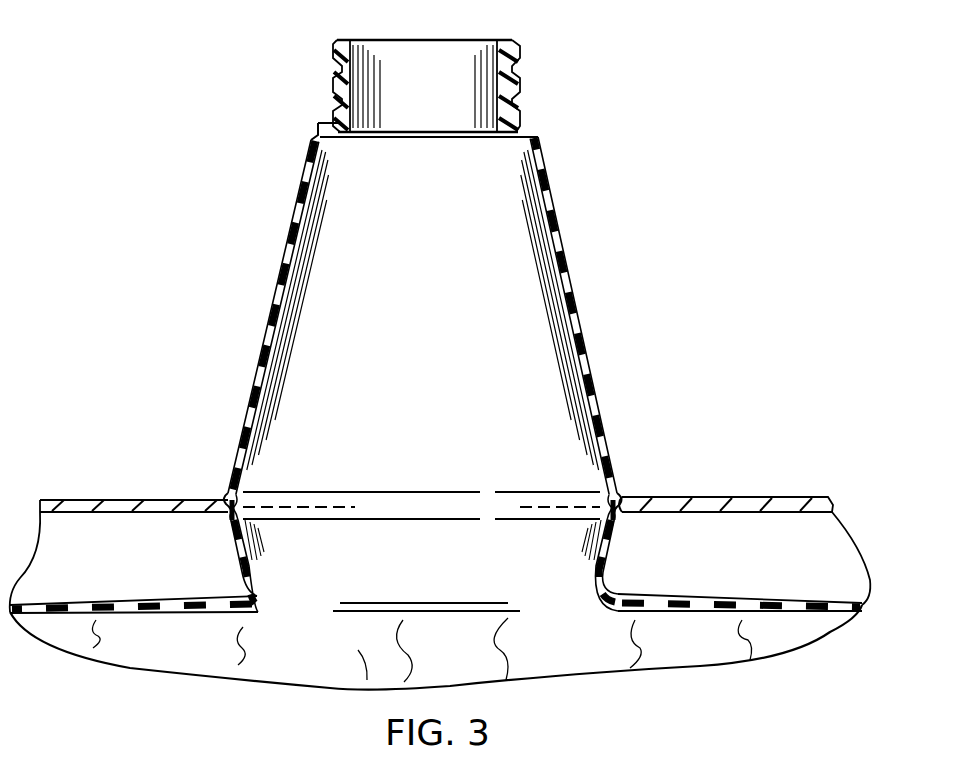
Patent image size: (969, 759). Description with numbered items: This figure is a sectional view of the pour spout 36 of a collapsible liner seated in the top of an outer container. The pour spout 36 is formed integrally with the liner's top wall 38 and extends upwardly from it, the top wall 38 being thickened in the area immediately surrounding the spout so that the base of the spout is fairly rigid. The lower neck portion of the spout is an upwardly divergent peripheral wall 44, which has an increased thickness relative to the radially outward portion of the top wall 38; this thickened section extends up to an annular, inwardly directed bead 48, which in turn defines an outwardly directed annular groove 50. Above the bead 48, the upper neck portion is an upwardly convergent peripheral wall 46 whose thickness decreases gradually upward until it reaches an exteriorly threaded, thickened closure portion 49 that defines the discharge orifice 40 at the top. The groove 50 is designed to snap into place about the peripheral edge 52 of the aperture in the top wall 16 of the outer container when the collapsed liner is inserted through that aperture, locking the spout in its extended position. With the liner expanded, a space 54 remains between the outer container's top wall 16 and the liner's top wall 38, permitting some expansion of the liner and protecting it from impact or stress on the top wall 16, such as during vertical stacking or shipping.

The top wall of the outer container 16 is at (760, 497).
The pour spout 36 is at (627, 216).
The top wall 38 is at (773, 596).
The discharge orifice 40 is at (445, 48).
The upwardly divergent peripheral wall 44 is at (612, 543).
The upwardly convergent peripheral wall 46 is at (587, 358).
The annular inwardly directed bead 48 is at (613, 478).
The exteriorly threaded closure portion 49 is at (506, 93).
The outwardly directed annular groove 50 is at (630, 497).
The peripheral edge of the aperture 52 is at (227, 500).
The space 54 is at (110, 527).